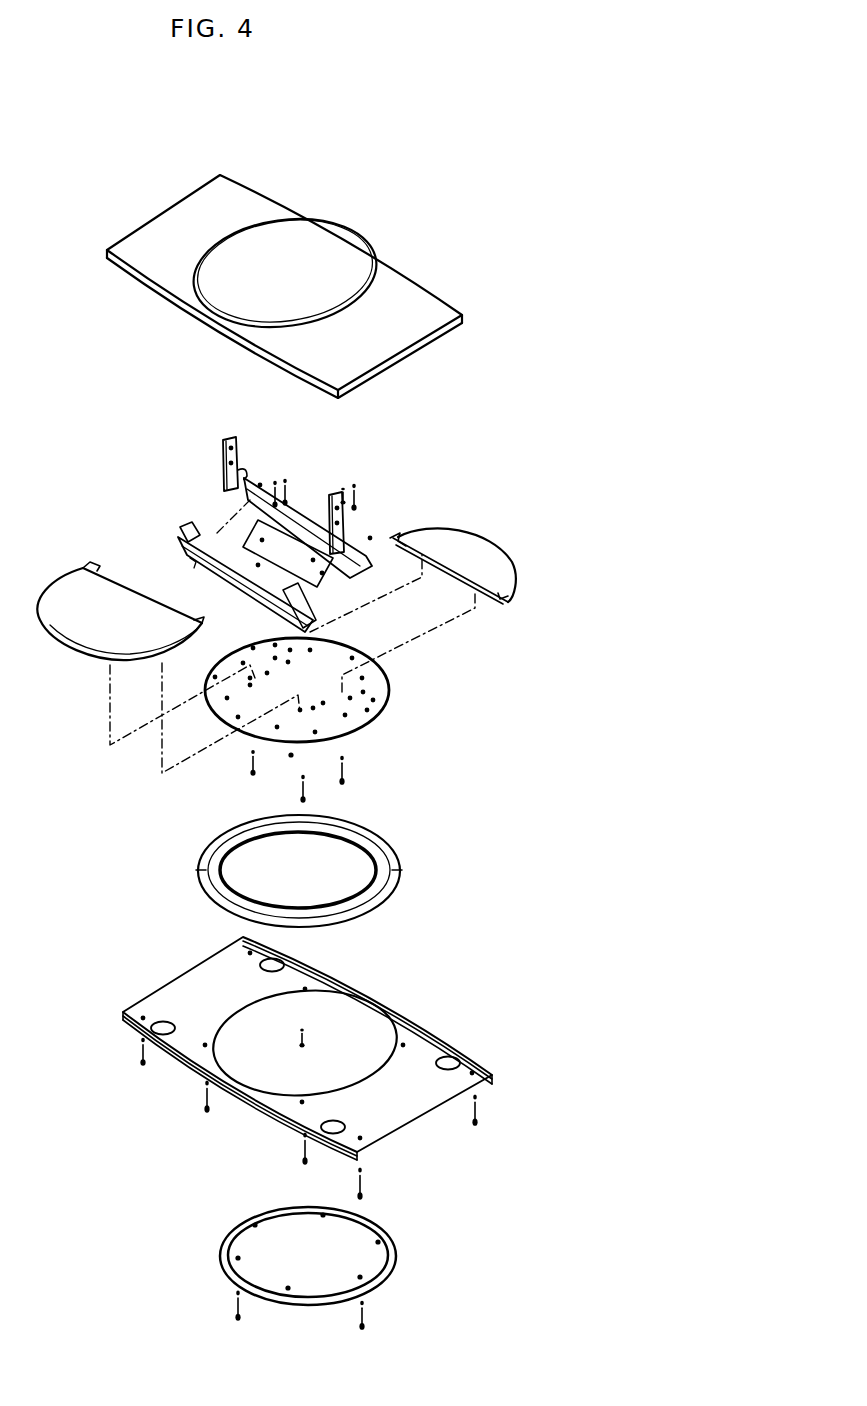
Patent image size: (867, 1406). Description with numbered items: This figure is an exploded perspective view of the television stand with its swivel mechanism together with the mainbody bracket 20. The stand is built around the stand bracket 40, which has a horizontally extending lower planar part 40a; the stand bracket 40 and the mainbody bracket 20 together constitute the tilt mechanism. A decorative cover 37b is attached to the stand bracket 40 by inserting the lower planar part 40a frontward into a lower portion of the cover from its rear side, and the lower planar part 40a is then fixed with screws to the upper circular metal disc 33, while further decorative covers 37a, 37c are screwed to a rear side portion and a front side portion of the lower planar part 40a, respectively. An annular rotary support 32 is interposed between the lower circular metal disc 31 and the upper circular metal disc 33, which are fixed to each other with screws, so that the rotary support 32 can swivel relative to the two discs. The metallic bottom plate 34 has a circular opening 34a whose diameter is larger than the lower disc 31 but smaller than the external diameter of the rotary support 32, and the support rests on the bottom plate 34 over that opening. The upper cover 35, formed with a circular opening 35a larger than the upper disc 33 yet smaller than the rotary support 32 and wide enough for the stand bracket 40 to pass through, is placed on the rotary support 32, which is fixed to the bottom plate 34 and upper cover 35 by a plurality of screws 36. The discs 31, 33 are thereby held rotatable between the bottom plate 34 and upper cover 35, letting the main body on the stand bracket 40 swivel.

The mainbody bracket 20 is at (219, 430).
The lower circular metal disc 31 is at (214, 1266).
The annular rotary support 32 is at (396, 836).
The upper circular metal disc 33 is at (400, 698).
The metallic bottom plate 34 is at (431, 1125).
The circular opening 34a is at (373, 1023).
The upper cover 35 is at (432, 353).
The circular opening 35a is at (340, 268).
The screws 36 is at (131, 1069).
The decorative cover 37a is at (482, 555).
The decorative cover 37b is at (182, 532).
The decorative cover 37c is at (100, 563).
The stand bracket 40 is at (309, 497).
The lower planar part 40a is at (217, 533).